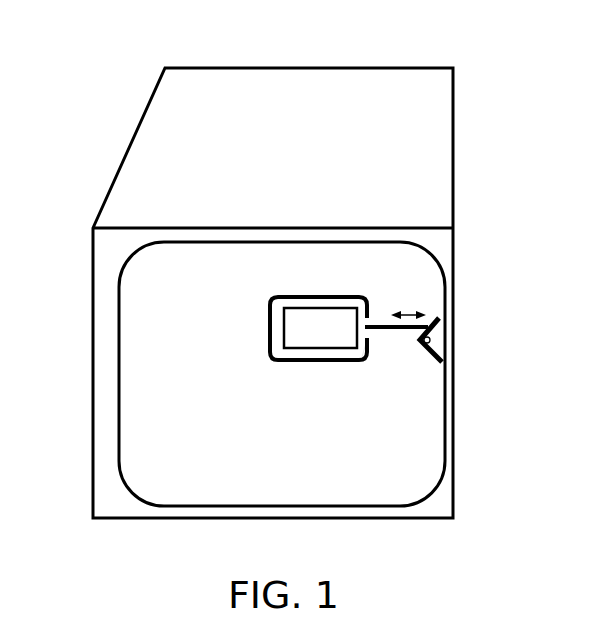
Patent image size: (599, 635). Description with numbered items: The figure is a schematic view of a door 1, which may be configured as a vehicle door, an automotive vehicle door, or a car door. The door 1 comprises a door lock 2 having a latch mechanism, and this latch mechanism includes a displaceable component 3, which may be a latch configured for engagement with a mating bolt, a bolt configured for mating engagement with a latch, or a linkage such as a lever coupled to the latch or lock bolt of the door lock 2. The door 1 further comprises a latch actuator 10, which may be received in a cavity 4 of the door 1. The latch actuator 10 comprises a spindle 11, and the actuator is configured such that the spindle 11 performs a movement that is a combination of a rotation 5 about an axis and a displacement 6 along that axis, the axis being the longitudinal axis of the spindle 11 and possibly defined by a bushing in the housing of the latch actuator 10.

The door 1 is at (126, 80).
The door lock 2 is at (452, 300).
The displaceable component 3 is at (440, 363).
The cavity 4 is at (278, 298).
The rotation 5 is at (385, 334).
The displacement 6 is at (410, 313).
The latch actuator 10 is at (273, 357).
The spindle 11 is at (365, 353).